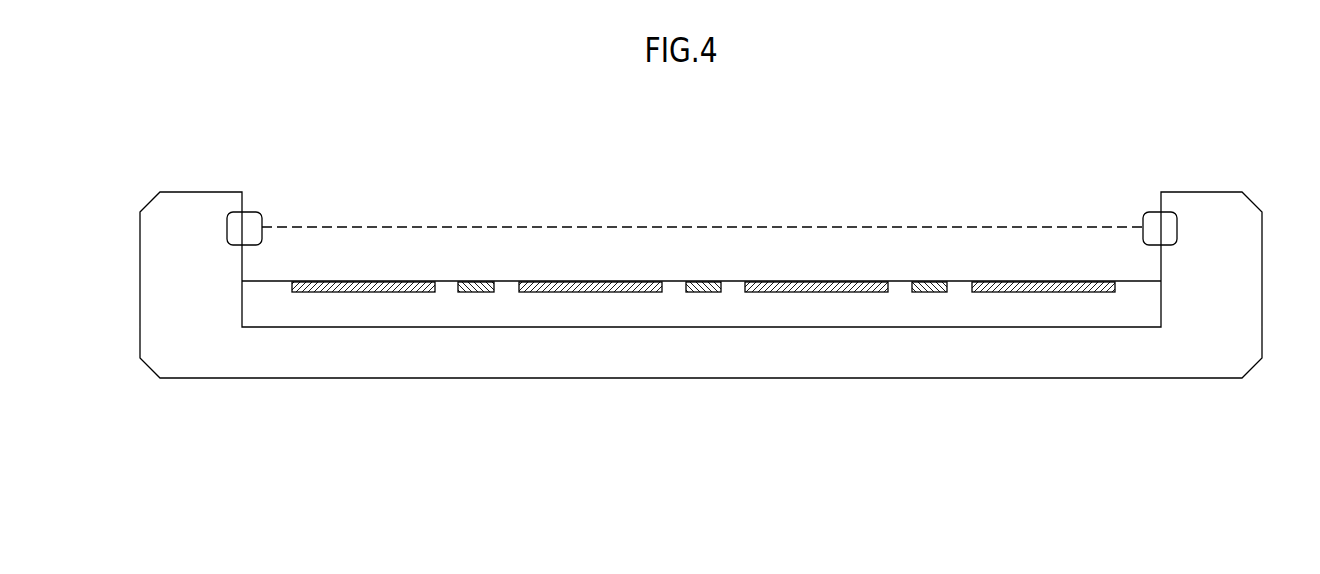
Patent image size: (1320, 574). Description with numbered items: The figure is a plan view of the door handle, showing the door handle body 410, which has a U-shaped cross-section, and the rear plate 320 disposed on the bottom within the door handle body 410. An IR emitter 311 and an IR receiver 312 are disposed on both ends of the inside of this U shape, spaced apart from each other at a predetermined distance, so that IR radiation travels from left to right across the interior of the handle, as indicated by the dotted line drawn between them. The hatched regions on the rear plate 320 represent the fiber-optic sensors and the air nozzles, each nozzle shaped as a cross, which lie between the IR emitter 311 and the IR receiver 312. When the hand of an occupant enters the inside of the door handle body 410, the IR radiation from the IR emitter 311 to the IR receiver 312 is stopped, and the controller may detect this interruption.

The IR emitter 311 is at (248, 220).
The IR receiver 312 is at (1156, 220).
The rear plate 320 is at (977, 313).
The door handle body 410 is at (757, 365).